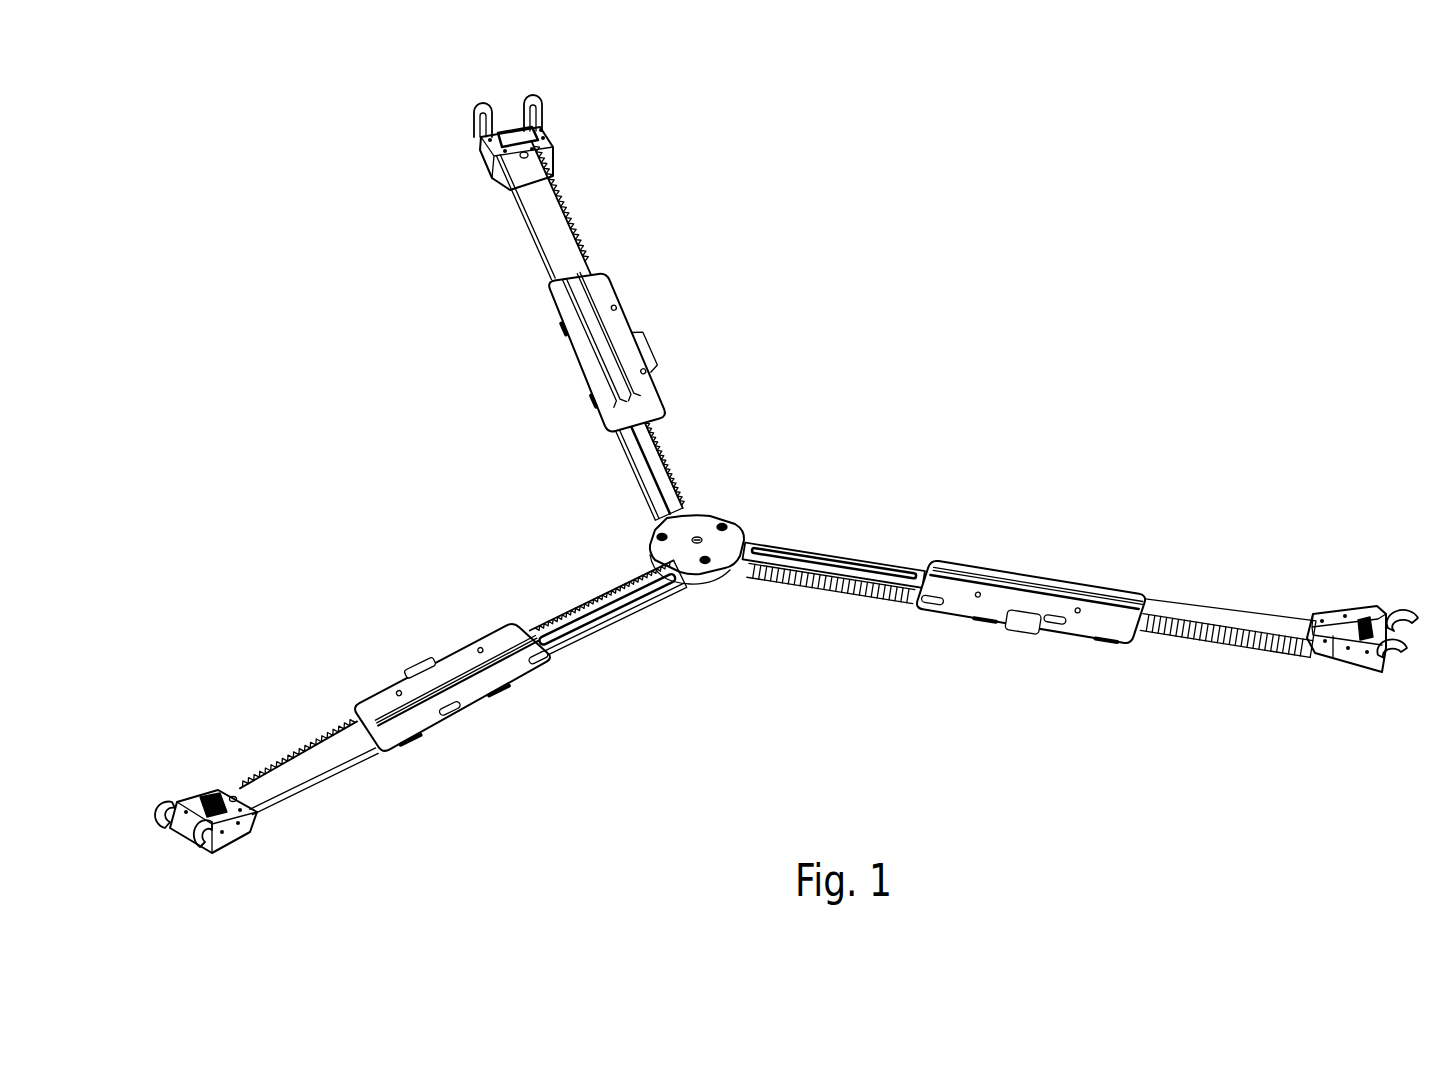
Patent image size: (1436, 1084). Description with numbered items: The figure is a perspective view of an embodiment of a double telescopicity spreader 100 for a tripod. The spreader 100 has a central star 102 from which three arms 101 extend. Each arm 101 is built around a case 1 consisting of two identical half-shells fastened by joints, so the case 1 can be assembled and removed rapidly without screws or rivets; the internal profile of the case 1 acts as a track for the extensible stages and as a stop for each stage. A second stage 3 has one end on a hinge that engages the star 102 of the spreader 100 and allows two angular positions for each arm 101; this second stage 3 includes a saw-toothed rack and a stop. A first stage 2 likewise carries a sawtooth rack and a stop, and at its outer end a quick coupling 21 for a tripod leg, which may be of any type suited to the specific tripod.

The case 1 is at (608, 290).
The first stage 2 is at (550, 223).
The second stage 3 is at (660, 470).
The quick coupling 21 is at (537, 113).
The double telescopicity spreader 100 is at (1013, 717).
The arm 101 is at (1073, 562).
The star 102 is at (723, 543).